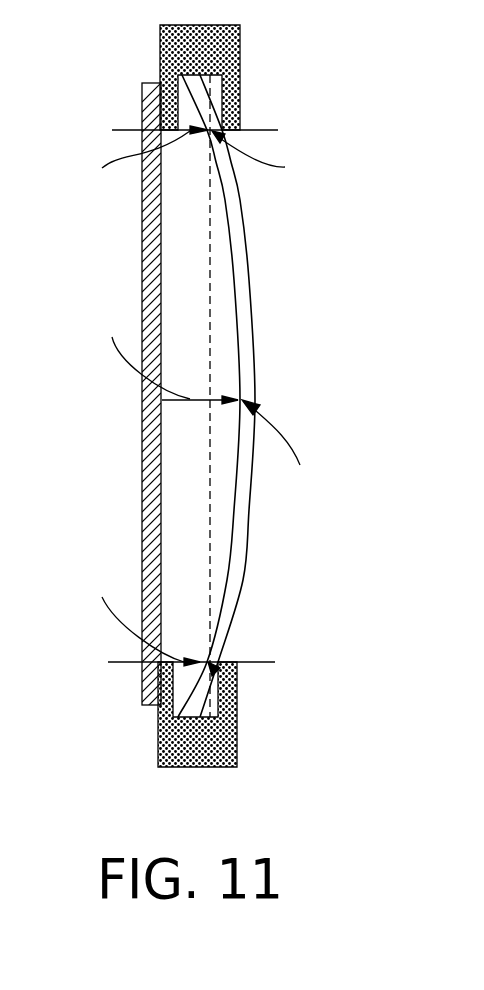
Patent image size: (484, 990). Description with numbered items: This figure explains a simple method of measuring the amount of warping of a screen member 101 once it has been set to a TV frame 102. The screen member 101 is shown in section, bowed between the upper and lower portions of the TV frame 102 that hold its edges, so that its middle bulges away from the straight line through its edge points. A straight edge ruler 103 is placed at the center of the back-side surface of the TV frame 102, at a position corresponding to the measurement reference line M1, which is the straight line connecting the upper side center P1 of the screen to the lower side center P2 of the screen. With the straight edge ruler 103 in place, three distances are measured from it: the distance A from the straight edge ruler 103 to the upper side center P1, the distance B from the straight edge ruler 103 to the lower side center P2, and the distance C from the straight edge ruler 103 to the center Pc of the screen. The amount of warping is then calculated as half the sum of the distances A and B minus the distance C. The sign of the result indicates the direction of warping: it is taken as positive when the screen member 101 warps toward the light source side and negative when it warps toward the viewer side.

The screen member 101 is at (255, 343).
The TV frame 102 is at (240, 43).
The straight edge ruler 103 is at (143, 273).
The measurement reference line M1 is at (210, 260).
The distance A is at (139, 160).
The distance B is at (144, 611).
The distance C is at (158, 354).
The upper side center P1 is at (273, 160).
The lower side center P2 is at (233, 688).
The center of the screen Pc is at (292, 444).